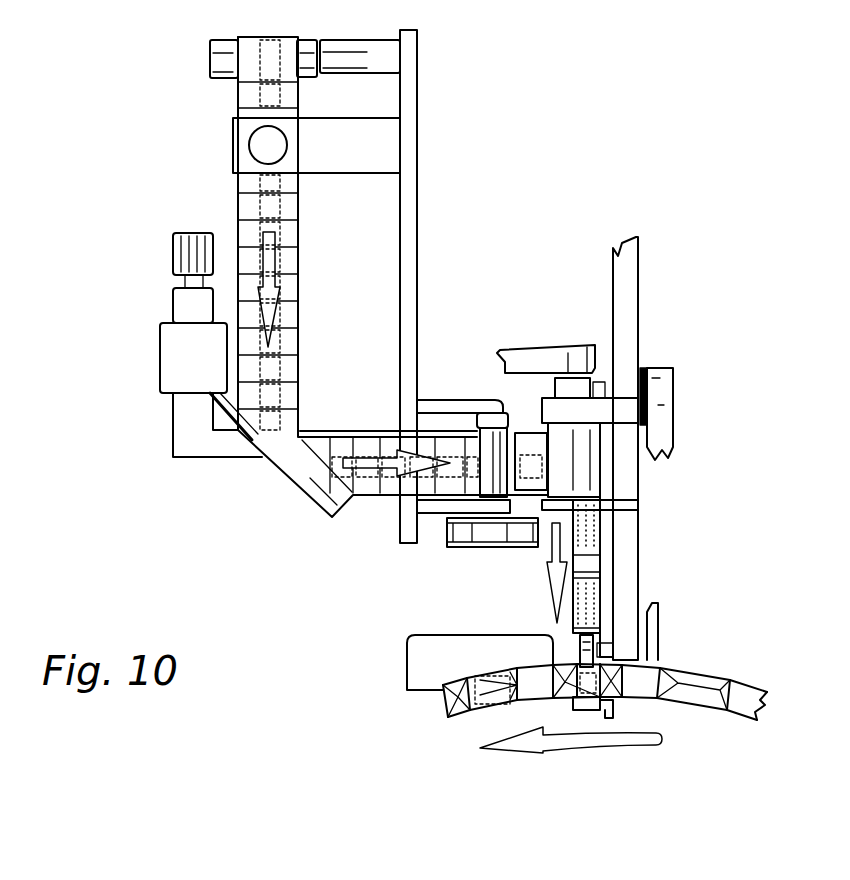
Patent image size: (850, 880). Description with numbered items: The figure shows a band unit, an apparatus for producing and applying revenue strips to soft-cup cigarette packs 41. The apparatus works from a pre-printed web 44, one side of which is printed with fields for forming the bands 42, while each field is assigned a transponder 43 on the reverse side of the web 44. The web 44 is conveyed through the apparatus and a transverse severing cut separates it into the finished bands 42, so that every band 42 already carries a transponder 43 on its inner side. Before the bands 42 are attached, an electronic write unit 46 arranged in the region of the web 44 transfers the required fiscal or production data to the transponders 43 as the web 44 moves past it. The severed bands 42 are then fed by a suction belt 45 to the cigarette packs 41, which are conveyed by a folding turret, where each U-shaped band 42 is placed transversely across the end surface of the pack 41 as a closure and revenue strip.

The cigarette pack 41 is at (443, 703).
The band 42 is at (597, 580).
The transponder 43 is at (278, 463).
The web 44 is at (300, 258).
The suction belt 45 is at (597, 563).
The electronic write unit 46 is at (305, 148).